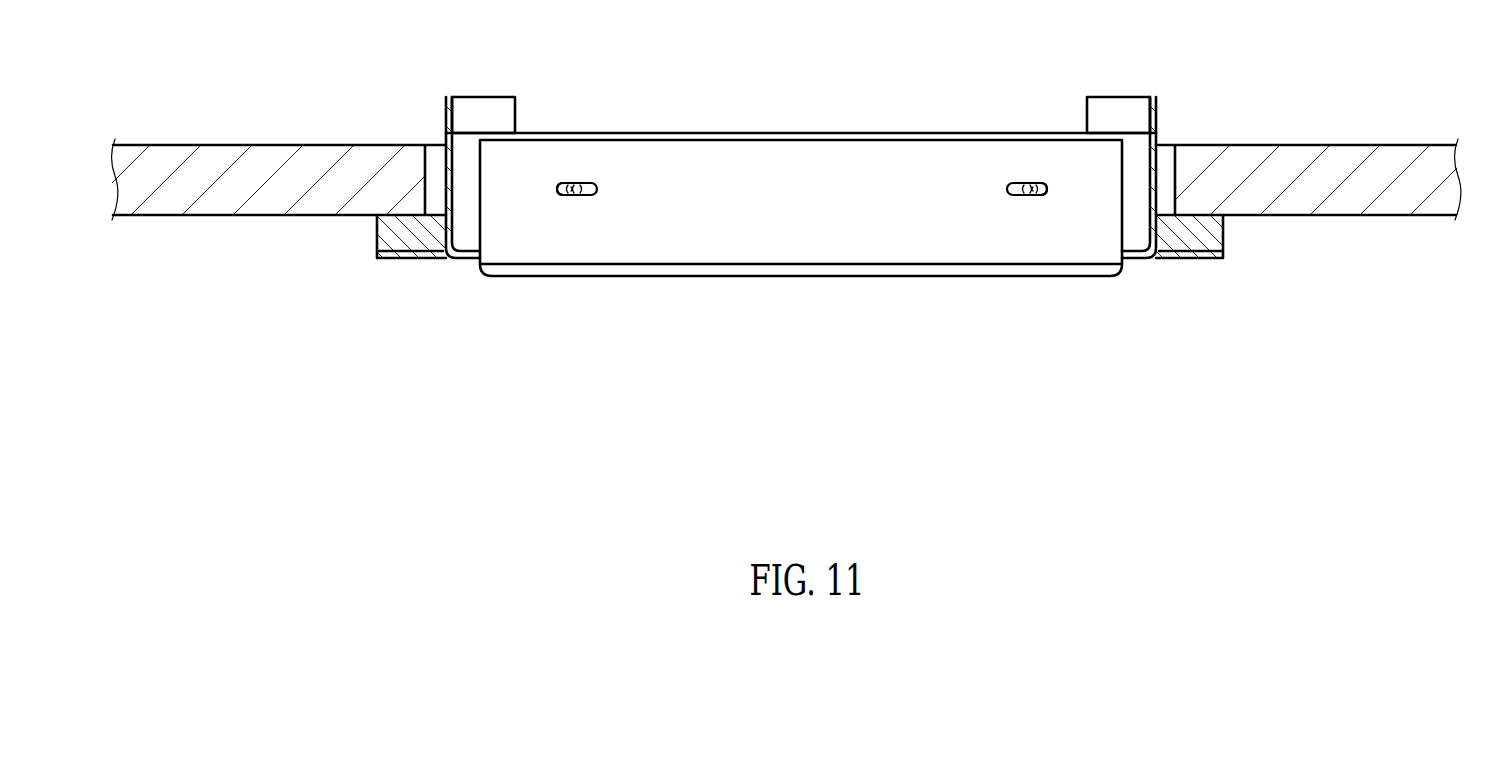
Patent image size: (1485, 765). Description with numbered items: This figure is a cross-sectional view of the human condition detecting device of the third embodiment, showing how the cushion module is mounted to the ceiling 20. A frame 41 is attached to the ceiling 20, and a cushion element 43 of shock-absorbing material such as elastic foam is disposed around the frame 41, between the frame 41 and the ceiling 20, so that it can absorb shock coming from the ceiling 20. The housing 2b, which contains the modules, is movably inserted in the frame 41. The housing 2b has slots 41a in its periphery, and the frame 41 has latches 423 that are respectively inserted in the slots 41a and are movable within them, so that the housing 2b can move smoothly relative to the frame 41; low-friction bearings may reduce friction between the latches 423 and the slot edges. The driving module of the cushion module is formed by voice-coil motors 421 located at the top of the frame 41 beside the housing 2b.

The ceiling 20 is at (207, 207).
The cushion element 43 is at (377, 228).
The frame 41 is at (445, 131).
The slots 41a is at (557, 197).
The voice-coil motors 421 is at (481, 110).
The latches 423 is at (580, 196).
The housing 2b is at (802, 277).